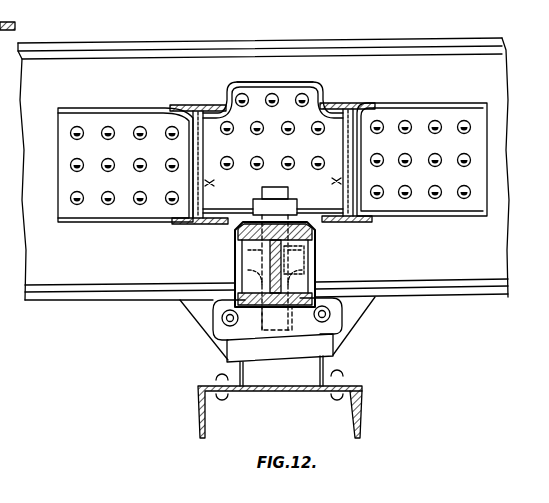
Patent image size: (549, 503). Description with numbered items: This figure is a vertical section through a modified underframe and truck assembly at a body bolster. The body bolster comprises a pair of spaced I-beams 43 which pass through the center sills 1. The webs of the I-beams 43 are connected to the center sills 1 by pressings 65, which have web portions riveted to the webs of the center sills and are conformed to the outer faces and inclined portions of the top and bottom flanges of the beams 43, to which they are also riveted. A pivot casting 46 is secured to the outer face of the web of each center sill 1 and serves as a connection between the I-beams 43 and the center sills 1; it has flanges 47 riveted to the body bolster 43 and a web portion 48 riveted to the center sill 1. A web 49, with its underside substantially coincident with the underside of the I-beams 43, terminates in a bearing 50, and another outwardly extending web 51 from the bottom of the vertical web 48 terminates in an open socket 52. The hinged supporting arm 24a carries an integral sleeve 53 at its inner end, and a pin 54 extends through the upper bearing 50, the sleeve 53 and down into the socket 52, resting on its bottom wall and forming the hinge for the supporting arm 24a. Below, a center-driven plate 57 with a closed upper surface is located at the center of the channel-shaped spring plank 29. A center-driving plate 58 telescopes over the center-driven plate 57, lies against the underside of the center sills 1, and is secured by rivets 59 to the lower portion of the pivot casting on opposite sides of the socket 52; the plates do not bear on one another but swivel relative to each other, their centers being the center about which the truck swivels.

The center sill 1 is at (369, 62).
The pressing 65 is at (92, 127).
The body bolster I-beam 43 is at (193, 108).
The pivot casting 46 is at (297, 148).
The web portion 48 is at (285, 101).
The flange 47 is at (208, 183).
The pin 54 is at (272, 194).
The bearing 50 is at (298, 204).
The web 49 is at (231, 229).
The outwardly extending web 51 is at (232, 283).
The sleeve 53 is at (298, 251).
The supporting arm 24a is at (303, 258).
The socket 52 is at (273, 333).
The rivet 59 is at (222, 319).
The center-driving plate 58 is at (234, 350).
The center-driven plate 57 is at (304, 370).
The spring plank 29 is at (364, 407).